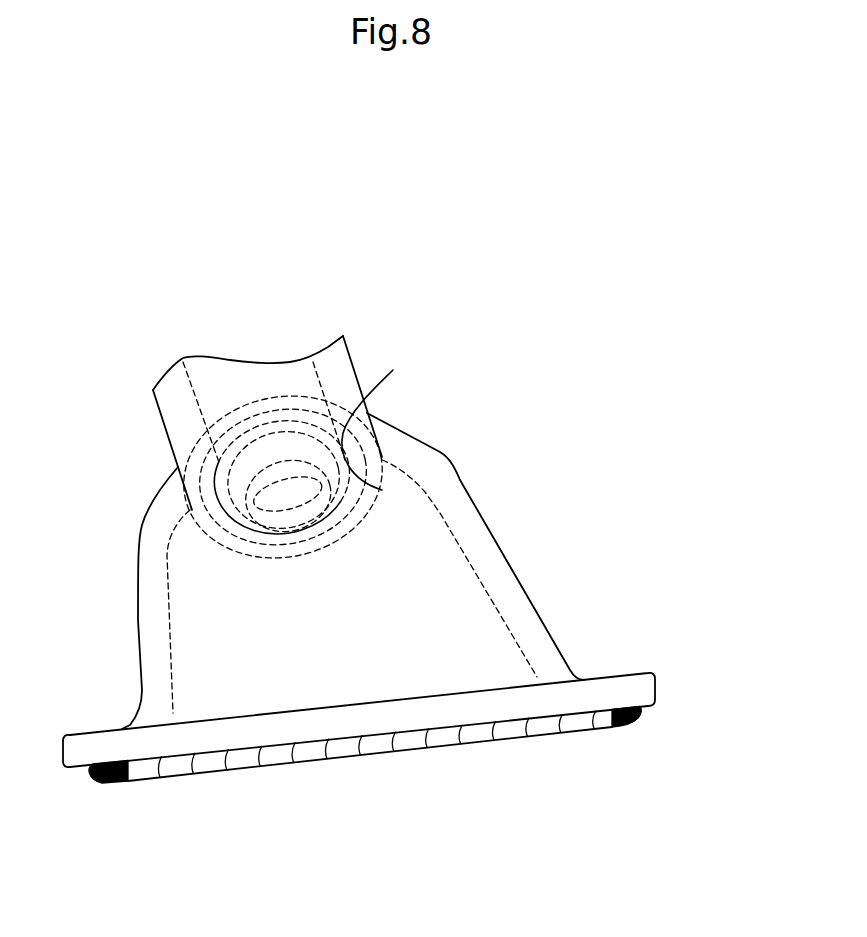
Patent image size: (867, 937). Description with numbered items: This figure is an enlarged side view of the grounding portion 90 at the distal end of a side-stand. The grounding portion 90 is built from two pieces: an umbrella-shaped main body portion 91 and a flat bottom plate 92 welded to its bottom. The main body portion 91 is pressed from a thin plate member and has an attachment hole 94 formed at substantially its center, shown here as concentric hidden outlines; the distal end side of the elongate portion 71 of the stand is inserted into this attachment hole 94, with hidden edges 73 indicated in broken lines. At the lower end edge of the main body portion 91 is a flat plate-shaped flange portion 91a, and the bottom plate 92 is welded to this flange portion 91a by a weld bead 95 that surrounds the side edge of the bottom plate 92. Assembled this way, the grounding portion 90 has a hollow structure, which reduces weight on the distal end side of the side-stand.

The elongate portion 71 is at (156, 410).
The hidden edge of boss 73 is at (195, 397).
The grounding portion 90 is at (494, 537).
The main body portion 91 is at (473, 616).
The flange portion 91a is at (640, 687).
The bottom plate 92 is at (247, 758).
The attachment hole 94 is at (393, 370).
The weld bead 95 is at (97, 784).